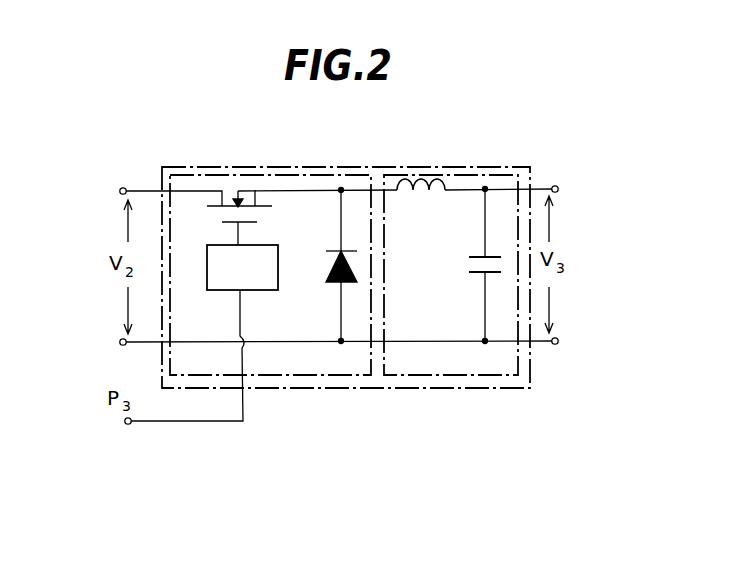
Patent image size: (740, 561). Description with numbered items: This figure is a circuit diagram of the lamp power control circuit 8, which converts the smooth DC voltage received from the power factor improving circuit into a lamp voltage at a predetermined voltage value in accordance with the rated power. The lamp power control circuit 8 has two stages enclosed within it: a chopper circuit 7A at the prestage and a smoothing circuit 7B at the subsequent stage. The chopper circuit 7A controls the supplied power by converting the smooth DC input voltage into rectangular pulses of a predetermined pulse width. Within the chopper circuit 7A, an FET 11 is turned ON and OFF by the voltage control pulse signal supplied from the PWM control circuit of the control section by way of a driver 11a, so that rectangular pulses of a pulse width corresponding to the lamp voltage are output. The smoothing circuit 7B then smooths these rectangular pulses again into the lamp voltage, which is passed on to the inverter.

The chopper circuit 7A is at (298, 375).
The smoothing circuit 7B is at (462, 375).
The lamp power control circuit 8 is at (390, 388).
The FET 11 is at (210, 215).
The driver 11a is at (280, 258).